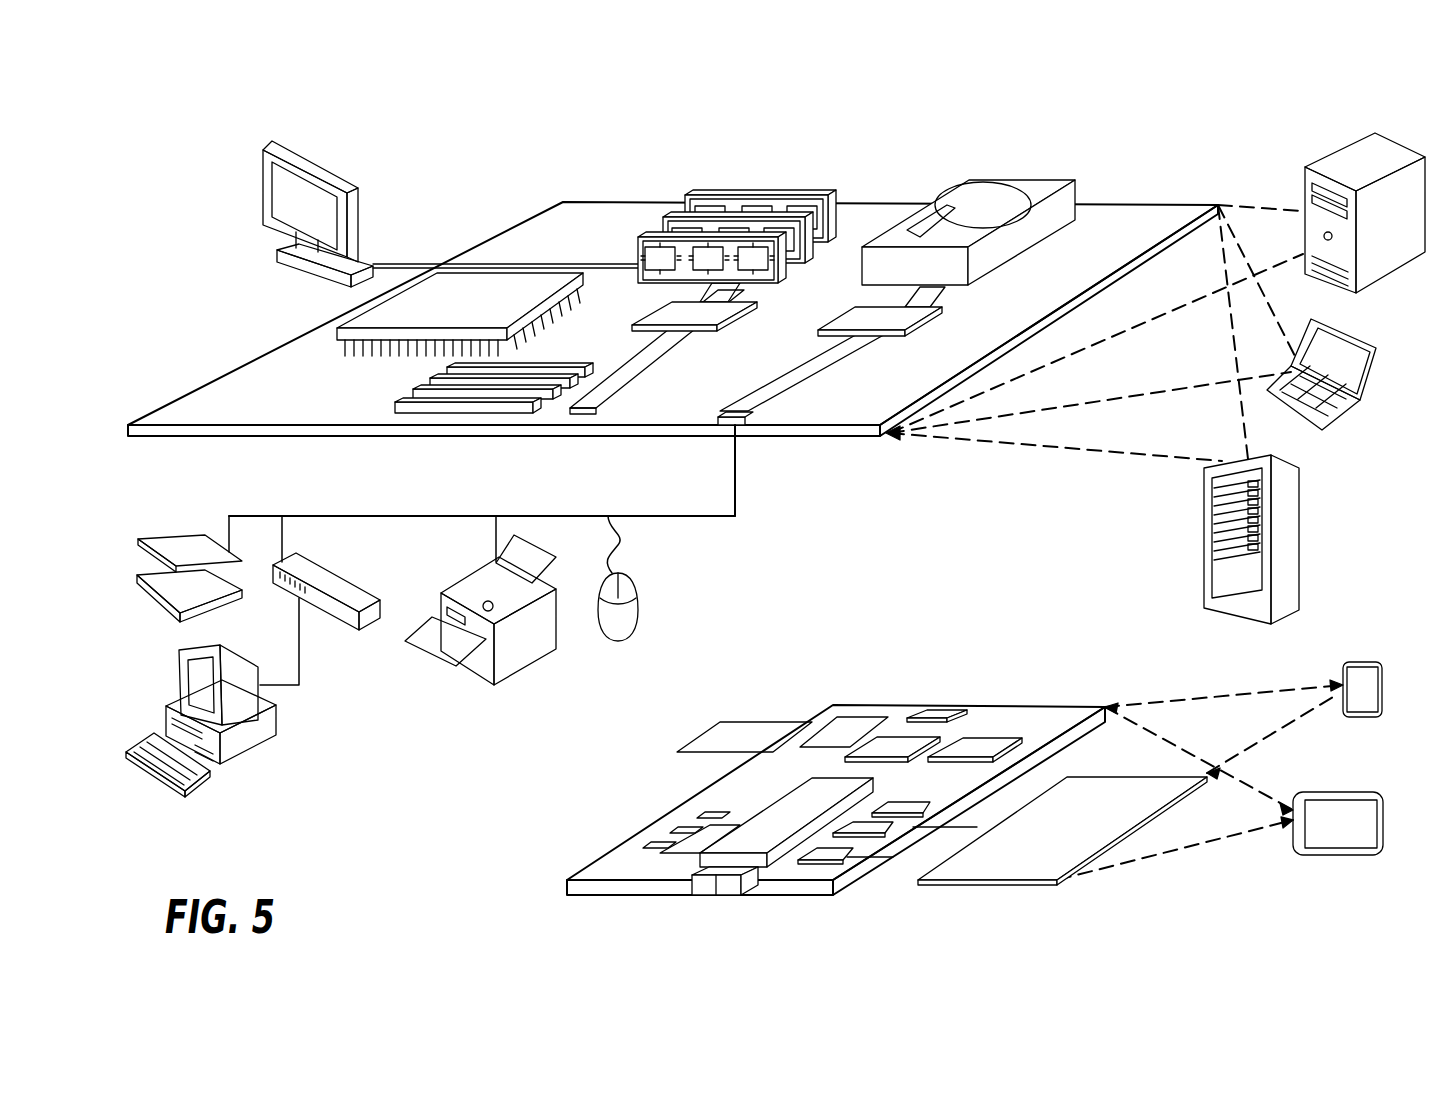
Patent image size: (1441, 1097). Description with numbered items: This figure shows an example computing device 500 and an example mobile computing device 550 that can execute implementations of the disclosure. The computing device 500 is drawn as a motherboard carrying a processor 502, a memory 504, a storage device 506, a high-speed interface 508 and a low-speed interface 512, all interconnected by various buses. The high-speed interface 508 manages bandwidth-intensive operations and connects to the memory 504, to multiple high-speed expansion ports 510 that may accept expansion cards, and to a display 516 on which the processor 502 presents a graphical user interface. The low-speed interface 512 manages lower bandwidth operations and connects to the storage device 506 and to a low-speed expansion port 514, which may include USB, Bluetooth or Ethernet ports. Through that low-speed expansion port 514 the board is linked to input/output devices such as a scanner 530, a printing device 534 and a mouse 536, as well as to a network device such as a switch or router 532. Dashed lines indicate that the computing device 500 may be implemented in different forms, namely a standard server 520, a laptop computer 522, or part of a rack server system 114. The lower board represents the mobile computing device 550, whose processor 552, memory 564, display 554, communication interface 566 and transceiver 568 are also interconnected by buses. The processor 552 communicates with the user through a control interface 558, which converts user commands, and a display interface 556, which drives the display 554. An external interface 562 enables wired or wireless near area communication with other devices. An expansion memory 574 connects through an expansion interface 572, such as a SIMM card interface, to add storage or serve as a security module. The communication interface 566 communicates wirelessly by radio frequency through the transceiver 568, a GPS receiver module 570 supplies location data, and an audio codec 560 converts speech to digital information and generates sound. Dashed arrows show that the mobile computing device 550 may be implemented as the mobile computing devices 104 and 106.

The computing device 500 is at (434, 88).
The processor 502 is at (337, 330).
The memory 504 is at (703, 193).
The storage device 506 is at (950, 180).
The high-speed interface 508 is at (667, 313).
The high-speed expansion ports 510 is at (420, 394).
The low-speed interface 512 is at (858, 315).
The low-speed expansion port 514 is at (745, 426).
The display 516 is at (266, 148).
The standard server 520 is at (1305, 178).
The laptop computer 522 is at (1375, 342).
The rack server system 114 is at (1204, 568).
The scanner 530 is at (173, 552).
The switch or router 532 is at (344, 624).
The printing device 534 is at (525, 666).
The mouse 536 is at (638, 610).
The mobile computing device 550 is at (541, 892).
The processor 552 is at (760, 847).
The display 554 is at (1020, 867).
The display interface 556 is at (837, 853).
The control interface 558 is at (872, 832).
The audio codec 560 is at (898, 807).
The external interface 562 is at (723, 883).
The memory 564 is at (675, 835).
The communication interface 566 is at (890, 747).
The transceiver 568 is at (975, 747).
The GPS receiver module 570 is at (943, 718).
The expansion interface 572 is at (805, 722).
The expansion memory 574 is at (722, 720).
The mobile computing device 104 is at (1360, 661).
The mobile computing device 106 is at (1293, 848).